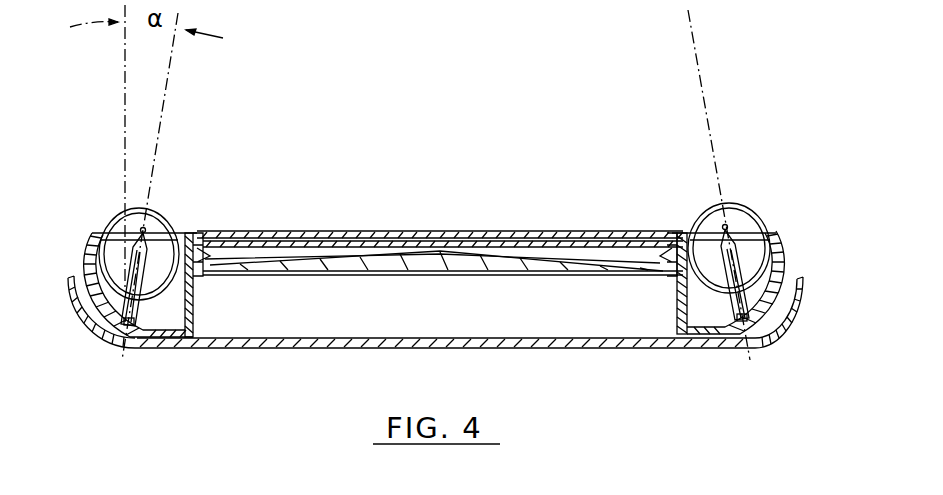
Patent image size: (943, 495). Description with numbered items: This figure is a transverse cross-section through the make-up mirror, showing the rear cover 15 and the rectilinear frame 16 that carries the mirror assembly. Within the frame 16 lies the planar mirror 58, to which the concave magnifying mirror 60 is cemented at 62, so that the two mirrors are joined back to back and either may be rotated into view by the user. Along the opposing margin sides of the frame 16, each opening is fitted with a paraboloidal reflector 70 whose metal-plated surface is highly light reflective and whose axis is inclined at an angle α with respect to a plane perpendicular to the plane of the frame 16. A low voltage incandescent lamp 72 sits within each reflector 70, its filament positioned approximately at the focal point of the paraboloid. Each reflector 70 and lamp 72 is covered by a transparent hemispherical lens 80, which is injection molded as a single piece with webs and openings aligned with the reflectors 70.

The rear cover 15 is at (330, 350).
The frame 16 is at (207, 278).
The planar mirror 58 is at (458, 240).
The concave magnifying mirror 60 is at (520, 260).
The cement 62 is at (402, 246).
The paraboloidal reflector 70 is at (83, 307).
The low voltage incandescent lamp 72 is at (127, 258).
The transparent hemispherical lens 80 is at (127, 210).